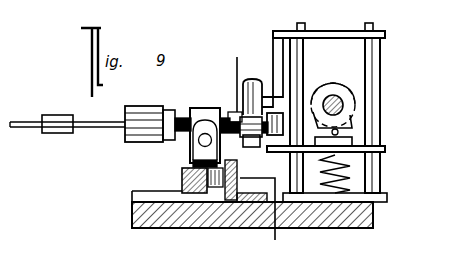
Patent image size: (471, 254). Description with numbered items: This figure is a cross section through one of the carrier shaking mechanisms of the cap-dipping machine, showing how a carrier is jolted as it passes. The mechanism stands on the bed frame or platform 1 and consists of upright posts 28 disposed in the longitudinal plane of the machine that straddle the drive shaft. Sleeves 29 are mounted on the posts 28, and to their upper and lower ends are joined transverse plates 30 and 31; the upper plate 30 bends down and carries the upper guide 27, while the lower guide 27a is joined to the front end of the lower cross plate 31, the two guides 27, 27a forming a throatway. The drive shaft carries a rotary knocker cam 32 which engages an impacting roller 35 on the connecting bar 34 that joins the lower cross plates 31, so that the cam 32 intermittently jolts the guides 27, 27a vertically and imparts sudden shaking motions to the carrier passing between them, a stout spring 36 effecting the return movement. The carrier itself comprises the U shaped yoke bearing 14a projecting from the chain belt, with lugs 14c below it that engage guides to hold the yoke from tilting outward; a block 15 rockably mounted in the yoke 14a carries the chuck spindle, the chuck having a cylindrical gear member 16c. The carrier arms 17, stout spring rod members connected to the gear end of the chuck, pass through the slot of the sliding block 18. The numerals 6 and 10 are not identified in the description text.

The bed frame or platform 1 is at (375, 219).
The wheel 6 is at (334, 96).
The pipe 10 is at (258, 148).
The U shaped yoke bearing 14a is at (191, 152).
The outwardly projected parallel lugs 14c is at (178, 182).
The block 15 is at (196, 107).
The cylindrical gear member 16c is at (146, 106).
The carrier arms 17 is at (19, 122).
The block 18 is at (55, 114).
The upper guide 27 is at (252, 80).
The guide 27a is at (250, 168).
The upright posts 28 is at (366, 24).
The sleeves 29 is at (366, 50).
The upper transverse plate 30 is at (386, 34).
The lower transverse plate 31 is at (384, 149).
The rotary knocker cams 32 is at (357, 92).
The connecting bar 34 is at (353, 141).
The impacting rollers 35 is at (351, 121).
The springs 36 is at (340, 178).